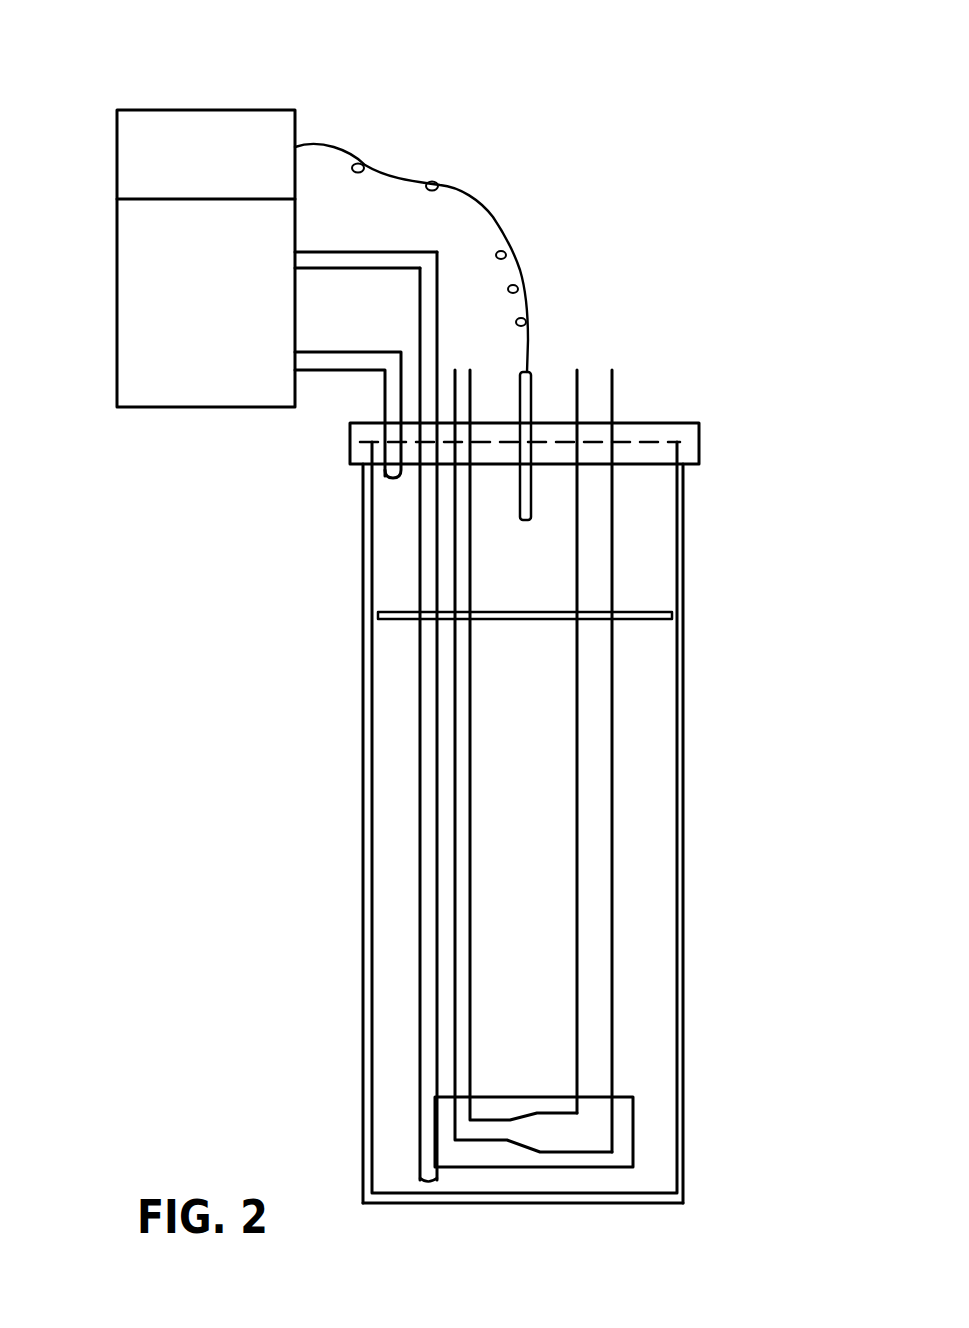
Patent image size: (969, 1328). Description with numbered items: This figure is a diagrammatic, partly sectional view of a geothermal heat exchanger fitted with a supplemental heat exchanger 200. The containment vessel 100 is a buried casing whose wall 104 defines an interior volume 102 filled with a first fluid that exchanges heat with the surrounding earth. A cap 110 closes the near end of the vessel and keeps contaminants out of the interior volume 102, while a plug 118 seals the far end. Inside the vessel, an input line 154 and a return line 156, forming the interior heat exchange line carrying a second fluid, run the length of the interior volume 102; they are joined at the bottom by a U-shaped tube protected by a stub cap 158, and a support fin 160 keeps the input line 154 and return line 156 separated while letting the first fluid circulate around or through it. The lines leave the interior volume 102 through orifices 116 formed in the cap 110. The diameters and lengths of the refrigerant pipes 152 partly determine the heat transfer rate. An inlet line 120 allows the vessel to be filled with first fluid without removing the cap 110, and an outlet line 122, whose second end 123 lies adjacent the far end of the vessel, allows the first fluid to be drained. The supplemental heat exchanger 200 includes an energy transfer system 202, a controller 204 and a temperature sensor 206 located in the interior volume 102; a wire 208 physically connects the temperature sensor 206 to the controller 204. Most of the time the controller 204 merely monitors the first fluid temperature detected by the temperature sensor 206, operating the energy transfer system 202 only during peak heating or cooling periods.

The containment vessel 100 is at (318, 818).
The interior volume 102 is at (648, 826).
The wall 104 is at (683, 888).
The cap 110 is at (692, 432).
The orifices 116 is at (530, 433).
The plug 118 is at (390, 1197).
The inlet line 120 is at (373, 366).
The outlet line 122 is at (430, 381).
The second end 123 is at (423, 1182).
The refrigerant pipes 152 is at (500, 357).
The input line 154 is at (463, 698).
The return line 156 is at (600, 723).
The stub cap 158 is at (447, 1117).
The support fin 160 is at (627, 613).
The supplemental heat exchanger 200 is at (642, 89).
The energy transfer system 202 is at (162, 312).
The controller 204 is at (248, 135).
The temperature sensor 206 is at (433, 532).
The wire 208 is at (423, 172).